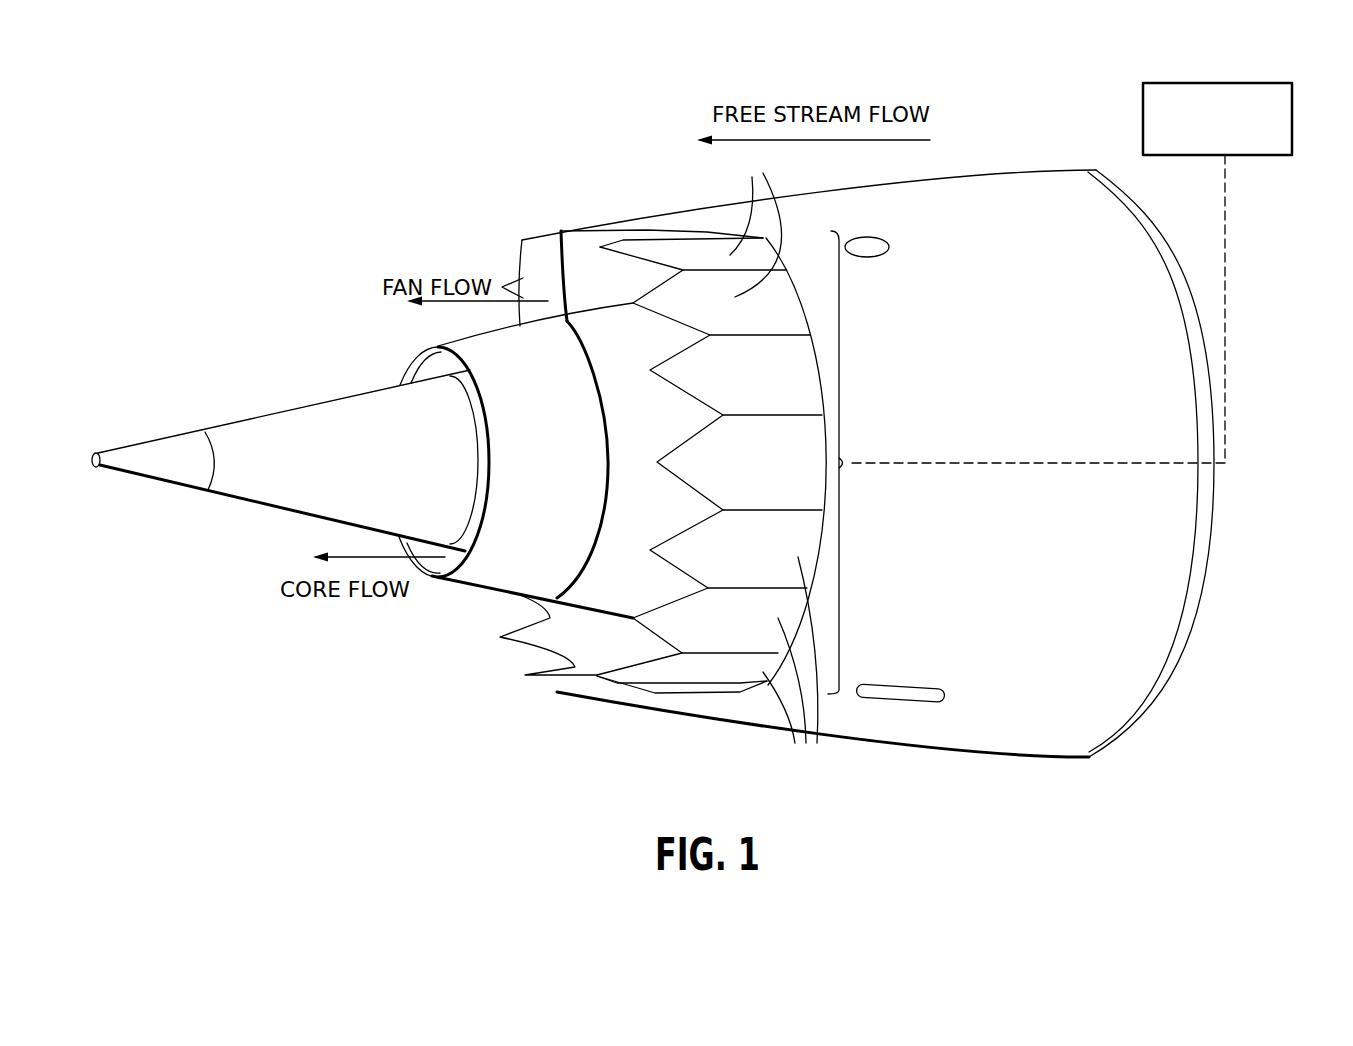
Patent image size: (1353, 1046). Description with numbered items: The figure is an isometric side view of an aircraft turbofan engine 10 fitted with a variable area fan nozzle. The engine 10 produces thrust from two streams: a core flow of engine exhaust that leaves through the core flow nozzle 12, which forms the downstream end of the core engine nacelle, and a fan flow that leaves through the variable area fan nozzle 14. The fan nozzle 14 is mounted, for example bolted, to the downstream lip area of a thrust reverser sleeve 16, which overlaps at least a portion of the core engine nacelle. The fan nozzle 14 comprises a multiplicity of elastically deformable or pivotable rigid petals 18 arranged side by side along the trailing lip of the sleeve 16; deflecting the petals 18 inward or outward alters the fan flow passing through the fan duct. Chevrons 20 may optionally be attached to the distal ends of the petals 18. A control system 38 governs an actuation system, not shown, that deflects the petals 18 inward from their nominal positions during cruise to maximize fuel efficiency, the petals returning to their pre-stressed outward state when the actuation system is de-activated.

The turbofan engine 10 is at (472, 209).
The core flow nozzle 12 is at (480, 587).
The variable area fan nozzle 14 is at (670, 224).
The thrust reverser sleeve 16 is at (1057, 738).
The petals 18 is at (781, 462).
The chevrons 20 is at (690, 468).
The control system 38 is at (1143, 110).